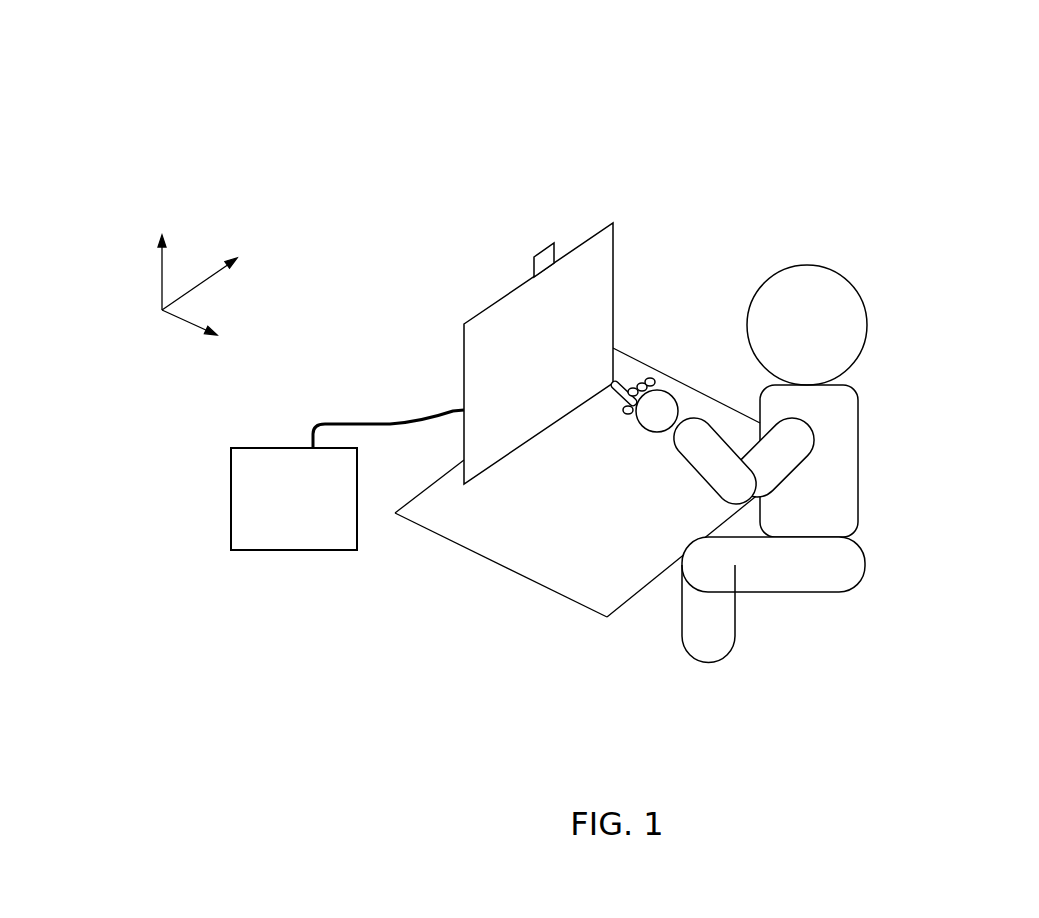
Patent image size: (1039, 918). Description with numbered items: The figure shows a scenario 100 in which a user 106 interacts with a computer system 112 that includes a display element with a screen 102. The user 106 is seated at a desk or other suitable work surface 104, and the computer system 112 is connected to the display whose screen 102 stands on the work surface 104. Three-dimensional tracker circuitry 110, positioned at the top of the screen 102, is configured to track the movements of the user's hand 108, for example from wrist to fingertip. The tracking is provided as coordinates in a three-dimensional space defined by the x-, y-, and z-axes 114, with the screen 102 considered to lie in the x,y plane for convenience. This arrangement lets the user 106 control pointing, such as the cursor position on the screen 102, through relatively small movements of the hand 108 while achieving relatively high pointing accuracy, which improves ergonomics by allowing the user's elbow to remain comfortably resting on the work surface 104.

The scenario 100 is at (626, 30).
The screen 102 is at (464, 360).
The work surface 104 is at (517, 572).
The user 106 is at (918, 311).
The hand 108 is at (657, 410).
The three-dimensional tracker circuitry 110 is at (537, 252).
The computer system 112 is at (347, 480).
The x-, y-, and z-axes 114 is at (178, 284).